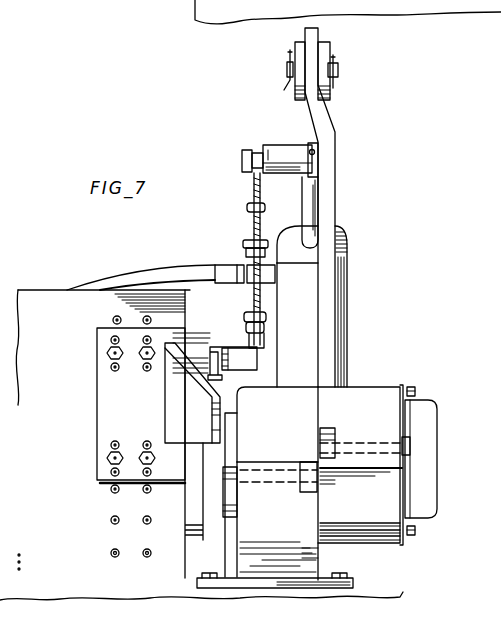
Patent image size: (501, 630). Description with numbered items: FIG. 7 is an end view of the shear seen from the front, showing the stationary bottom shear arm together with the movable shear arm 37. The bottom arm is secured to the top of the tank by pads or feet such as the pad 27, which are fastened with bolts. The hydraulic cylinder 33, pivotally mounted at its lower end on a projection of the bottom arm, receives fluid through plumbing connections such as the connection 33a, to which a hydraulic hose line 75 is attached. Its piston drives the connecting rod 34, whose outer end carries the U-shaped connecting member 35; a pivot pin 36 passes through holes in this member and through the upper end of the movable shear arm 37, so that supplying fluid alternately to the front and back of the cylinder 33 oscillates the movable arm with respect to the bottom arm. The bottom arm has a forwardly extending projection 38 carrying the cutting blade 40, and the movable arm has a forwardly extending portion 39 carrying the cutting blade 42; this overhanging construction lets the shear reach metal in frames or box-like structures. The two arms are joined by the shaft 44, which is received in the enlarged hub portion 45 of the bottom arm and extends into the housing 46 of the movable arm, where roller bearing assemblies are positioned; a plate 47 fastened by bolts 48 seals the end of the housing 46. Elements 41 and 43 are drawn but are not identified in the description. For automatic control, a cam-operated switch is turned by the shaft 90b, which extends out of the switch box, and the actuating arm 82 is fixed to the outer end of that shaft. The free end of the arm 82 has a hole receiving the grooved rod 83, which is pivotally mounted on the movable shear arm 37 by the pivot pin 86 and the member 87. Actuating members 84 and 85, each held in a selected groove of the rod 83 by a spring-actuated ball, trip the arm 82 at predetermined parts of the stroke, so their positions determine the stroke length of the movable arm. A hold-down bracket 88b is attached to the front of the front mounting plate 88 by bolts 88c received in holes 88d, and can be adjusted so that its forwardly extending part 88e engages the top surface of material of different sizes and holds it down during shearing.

The pad 27 is at (355, 586).
The hydraulic cylinder 33 is at (340, 300).
The plumbing connection 33a is at (268, 282).
The connecting rod 34 is at (308, 200).
The U-shaped connecting member 35 is at (328, 48).
The pivot pin 36 is at (338, 70).
The movable shear arm 37 is at (333, 207).
The forwardly extending projection 38 is at (320, 562).
The forwardly extending portion 39 is at (378, 393).
The cutting blade 40 is at (305, 492).
The drive shaft 41 is at (275, 470).
The cutting blade 42 is at (322, 433).
The motor shaft 43 is at (370, 442).
The shaft 44 is at (228, 440).
The enlarged hub portion 45 is at (286, 397).
The housing 46 is at (377, 538).
The plate 47 is at (427, 486).
The bolts 48 is at (416, 391).
The hydraulic hose line 75 is at (132, 278).
The actuating arm 82 is at (233, 358).
The grooved rod 83 is at (252, 227).
The actuating member 84 is at (243, 323).
The actuating member 85 is at (246, 253).
The pivot pin 86 is at (243, 163).
The member 87 is at (277, 157).
The front mounting plate 88 is at (42, 294).
The hold-down bracket 88b is at (105, 396).
The bolts 88c is at (107, 353).
The holes 88d is at (143, 519).
The forwardly extending part 88e is at (165, 415).
The shaft 90b is at (220, 334).